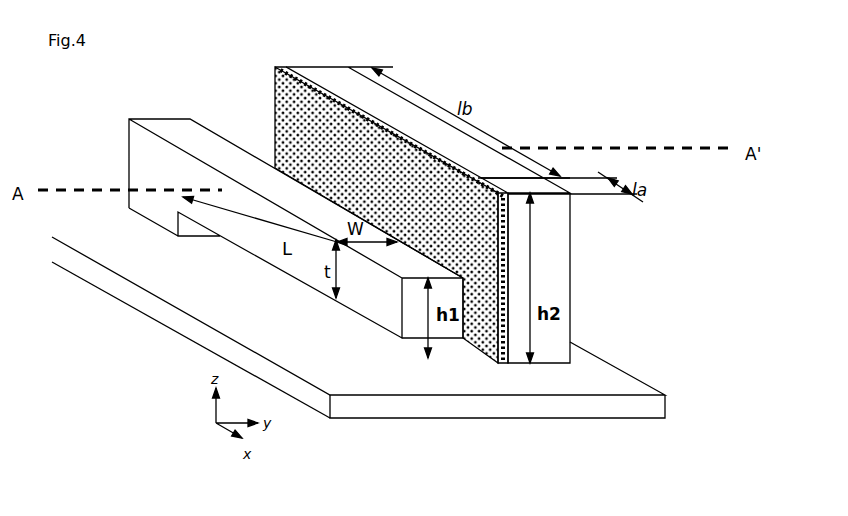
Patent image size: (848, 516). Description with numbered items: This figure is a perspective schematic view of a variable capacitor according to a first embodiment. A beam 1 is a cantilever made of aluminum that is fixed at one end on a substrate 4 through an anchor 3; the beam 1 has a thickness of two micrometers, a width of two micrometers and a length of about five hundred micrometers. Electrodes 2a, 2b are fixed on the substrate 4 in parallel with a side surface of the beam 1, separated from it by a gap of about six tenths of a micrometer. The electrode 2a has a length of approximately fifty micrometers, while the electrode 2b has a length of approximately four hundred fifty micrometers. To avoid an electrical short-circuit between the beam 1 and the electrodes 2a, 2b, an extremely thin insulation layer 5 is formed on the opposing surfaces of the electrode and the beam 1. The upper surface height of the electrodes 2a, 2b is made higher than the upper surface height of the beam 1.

The beam 1 is at (277, 262).
The electrode 2a is at (538, 188).
The electrode 2b is at (326, 75).
The anchor 3 is at (168, 227).
The substrate 4 is at (157, 308).
The insulation layer 5 is at (293, 68).